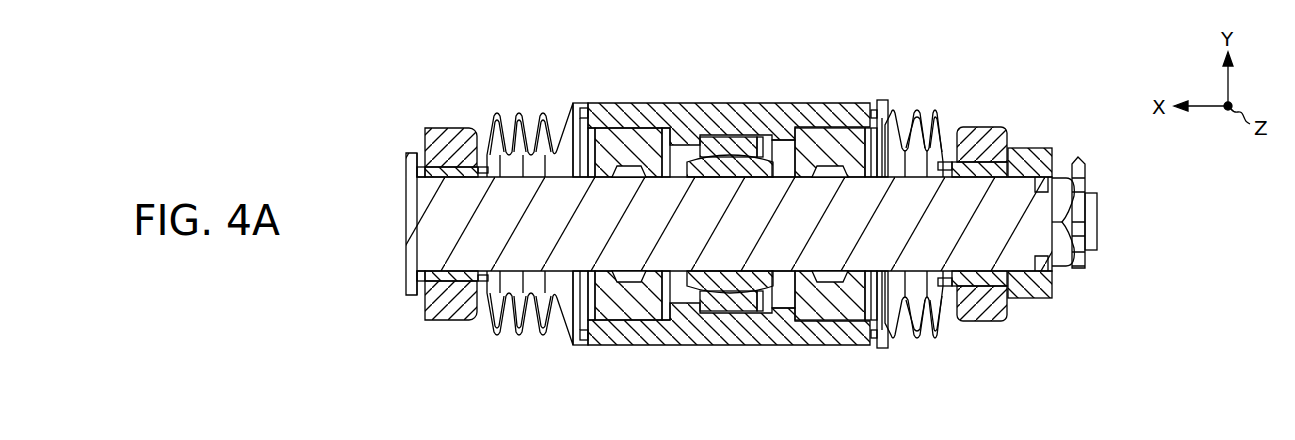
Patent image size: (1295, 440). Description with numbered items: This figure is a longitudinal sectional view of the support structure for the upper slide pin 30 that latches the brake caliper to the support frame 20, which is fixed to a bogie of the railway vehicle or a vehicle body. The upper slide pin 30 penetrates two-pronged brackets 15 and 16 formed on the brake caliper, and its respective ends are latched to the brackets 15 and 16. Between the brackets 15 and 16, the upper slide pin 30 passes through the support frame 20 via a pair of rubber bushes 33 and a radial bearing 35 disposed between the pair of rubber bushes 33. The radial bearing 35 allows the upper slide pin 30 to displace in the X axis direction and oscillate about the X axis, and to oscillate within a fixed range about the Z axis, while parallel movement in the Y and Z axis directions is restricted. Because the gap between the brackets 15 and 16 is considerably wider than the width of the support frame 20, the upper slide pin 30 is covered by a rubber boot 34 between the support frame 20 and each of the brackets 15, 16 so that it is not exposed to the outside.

The bracket 15 is at (980, 127).
The bracket 16 is at (451, 128).
The support frame 20 is at (773, 103).
The upper slide pin 30 is at (406, 212).
The rubber bush 33 is at (628, 133).
The rubber boot 34 is at (945, 330).
The radial bearing 35 is at (725, 137).